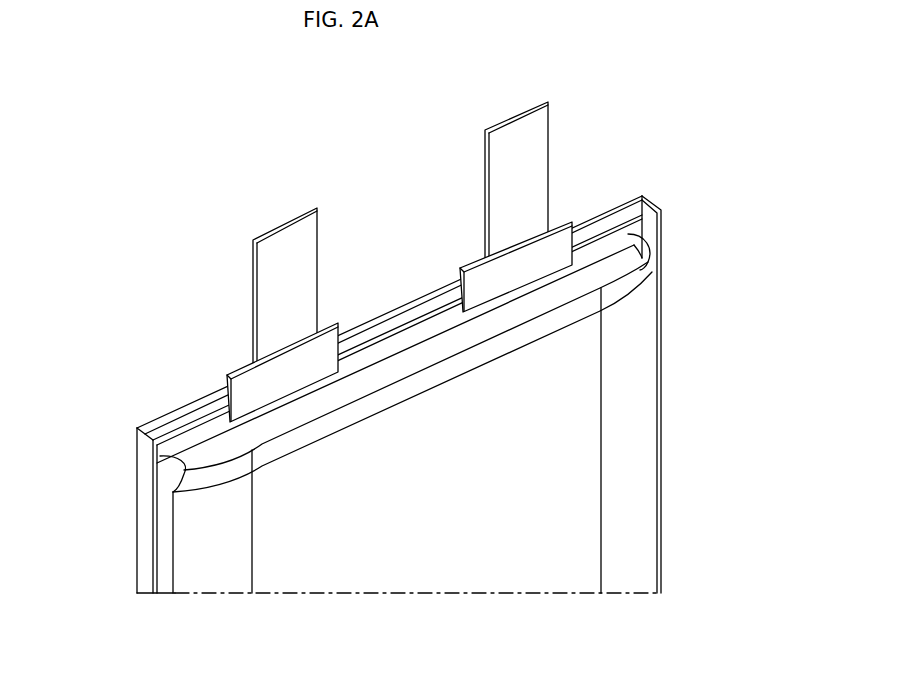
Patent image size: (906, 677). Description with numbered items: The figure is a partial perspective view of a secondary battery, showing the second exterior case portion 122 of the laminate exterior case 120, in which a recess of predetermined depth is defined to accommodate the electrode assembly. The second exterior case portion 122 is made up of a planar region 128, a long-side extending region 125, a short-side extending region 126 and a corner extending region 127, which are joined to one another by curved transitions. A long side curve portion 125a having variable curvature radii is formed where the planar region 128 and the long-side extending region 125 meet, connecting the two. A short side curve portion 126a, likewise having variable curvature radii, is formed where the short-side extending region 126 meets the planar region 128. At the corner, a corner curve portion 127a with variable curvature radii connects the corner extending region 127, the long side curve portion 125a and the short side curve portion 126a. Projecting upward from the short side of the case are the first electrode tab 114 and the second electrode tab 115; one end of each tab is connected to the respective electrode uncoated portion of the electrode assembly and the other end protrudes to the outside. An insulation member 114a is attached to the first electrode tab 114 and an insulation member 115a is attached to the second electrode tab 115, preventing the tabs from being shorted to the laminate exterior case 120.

The first electrode tab 114 is at (288, 238).
The insulation member 114a is at (238, 366).
The second electrode tab 115 is at (518, 133).
The insulation member 115a is at (564, 214).
The laminate exterior case 120 is at (394, 351).
The second exterior case portion 122 is at (461, 596).
The long-side extending region 125 is at (110, 510).
The long side curve portion 125a is at (187, 556).
The short-side extending region 126 is at (345, 411).
The short side curve portion 126a is at (442, 372).
The corner extending region 127 is at (166, 466).
The corner curve portion 127a is at (173, 484).
The planar region 128 is at (582, 438).